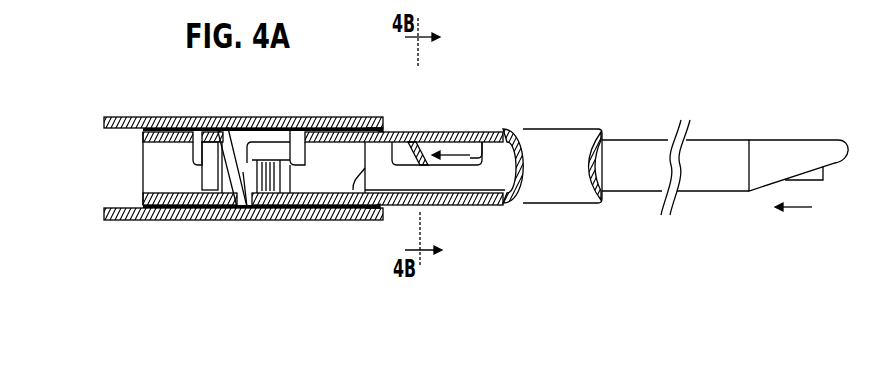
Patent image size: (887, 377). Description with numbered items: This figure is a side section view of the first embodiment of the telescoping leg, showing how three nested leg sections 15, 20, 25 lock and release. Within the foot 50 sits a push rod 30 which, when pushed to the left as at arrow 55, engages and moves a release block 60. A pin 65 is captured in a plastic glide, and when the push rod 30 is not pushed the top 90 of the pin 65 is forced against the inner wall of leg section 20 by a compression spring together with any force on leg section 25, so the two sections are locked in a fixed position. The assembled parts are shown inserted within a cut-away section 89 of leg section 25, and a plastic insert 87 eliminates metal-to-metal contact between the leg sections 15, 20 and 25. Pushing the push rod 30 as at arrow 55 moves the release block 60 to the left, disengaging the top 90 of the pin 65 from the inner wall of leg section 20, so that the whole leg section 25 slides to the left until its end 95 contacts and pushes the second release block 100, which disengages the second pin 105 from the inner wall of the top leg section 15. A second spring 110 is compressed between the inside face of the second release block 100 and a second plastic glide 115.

The top leg section 15 is at (310, 220).
The leg section 20 is at (553, 204).
The leg section 25 is at (731, 140).
The push rod 30 is at (823, 177).
The foot 50 is at (801, 140).
The arrow 55 is at (463, 170).
The release block 60 is at (473, 157).
The pin 65 is at (426, 147).
The plastic insert 87 is at (385, 128).
The cut-away section 89 is at (507, 143).
The top of pin 90 is at (408, 134).
The end of leg section 95 is at (375, 215).
The second release block 100 is at (297, 117).
The second pin 105 is at (228, 127).
The second spring 110 is at (266, 140).
The second plastic glide 115 is at (244, 208).